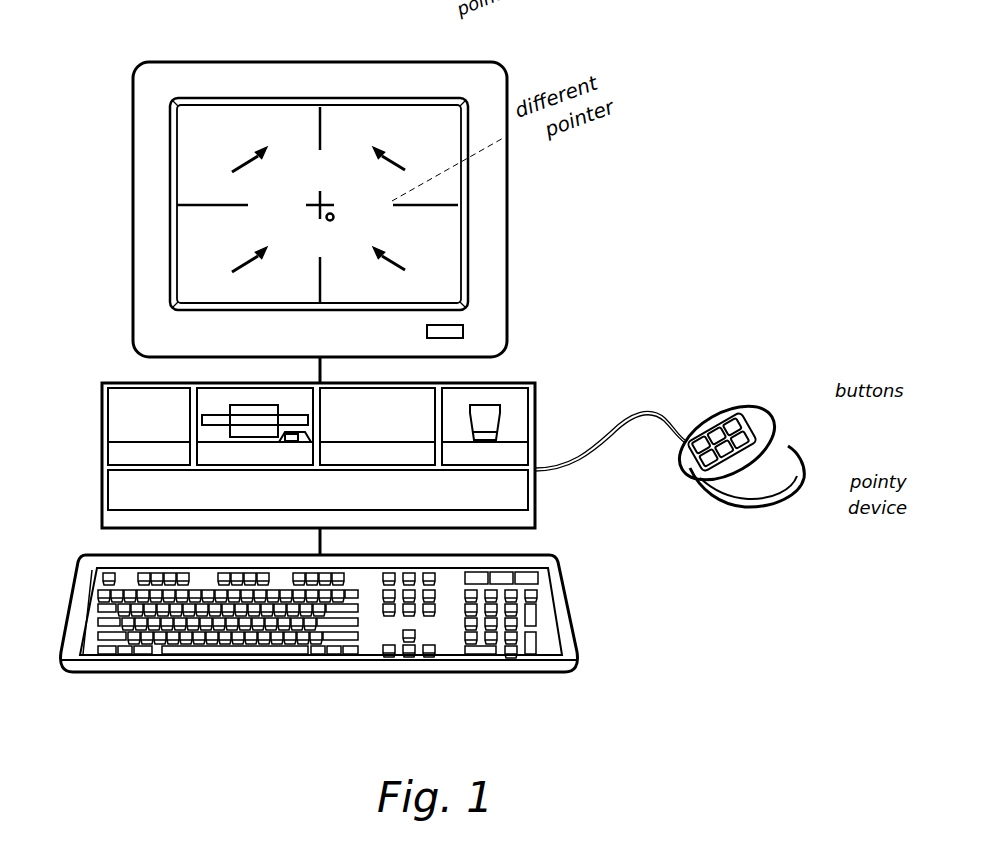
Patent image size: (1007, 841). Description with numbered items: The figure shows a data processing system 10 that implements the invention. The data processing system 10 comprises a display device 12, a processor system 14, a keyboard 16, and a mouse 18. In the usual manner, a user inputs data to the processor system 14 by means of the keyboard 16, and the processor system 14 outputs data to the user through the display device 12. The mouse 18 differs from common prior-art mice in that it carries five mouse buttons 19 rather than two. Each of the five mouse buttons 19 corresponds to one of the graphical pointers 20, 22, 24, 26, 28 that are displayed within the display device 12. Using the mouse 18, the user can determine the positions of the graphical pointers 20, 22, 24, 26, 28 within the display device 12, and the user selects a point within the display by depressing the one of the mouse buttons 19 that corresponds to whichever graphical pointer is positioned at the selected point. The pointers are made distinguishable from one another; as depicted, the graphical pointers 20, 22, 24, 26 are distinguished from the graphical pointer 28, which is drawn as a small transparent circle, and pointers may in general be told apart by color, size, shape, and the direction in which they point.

The data processing system 10 is at (602, 321).
The display device 12 is at (505, 225).
The processor system 14 is at (536, 412).
The keyboard 16 is at (552, 560).
The mouse 18 is at (743, 467).
The mouse buttons 19 is at (772, 436).
The graphical pointer 20 is at (386, 148).
The graphical pointer 22 is at (393, 260).
The graphical pointer 24 is at (265, 256).
The graphical pointer 26 is at (265, 156).
The graphical pointer 28 is at (336, 216).